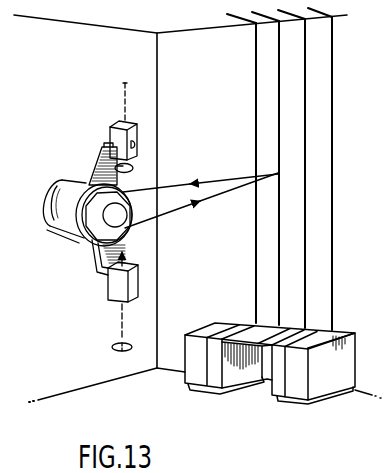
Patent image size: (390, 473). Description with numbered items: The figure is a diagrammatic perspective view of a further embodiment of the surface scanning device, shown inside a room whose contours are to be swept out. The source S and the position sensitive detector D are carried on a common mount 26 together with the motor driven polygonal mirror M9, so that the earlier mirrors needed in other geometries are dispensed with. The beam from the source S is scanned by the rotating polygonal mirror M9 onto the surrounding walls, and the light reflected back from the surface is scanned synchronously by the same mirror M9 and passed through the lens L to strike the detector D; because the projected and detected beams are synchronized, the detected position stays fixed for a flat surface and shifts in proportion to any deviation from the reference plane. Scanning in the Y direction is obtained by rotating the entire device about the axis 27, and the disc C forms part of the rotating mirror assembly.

The axis 27 is at (121, 89).
The common mount 26 is at (100, 151).
The lens L is at (133, 171).
The position sensitive detector D is at (68, 80).
The polygonal mirror M9 is at (78, 229).
The rotating disc / chopper C is at (104, 215).
The source S is at (115, 295).